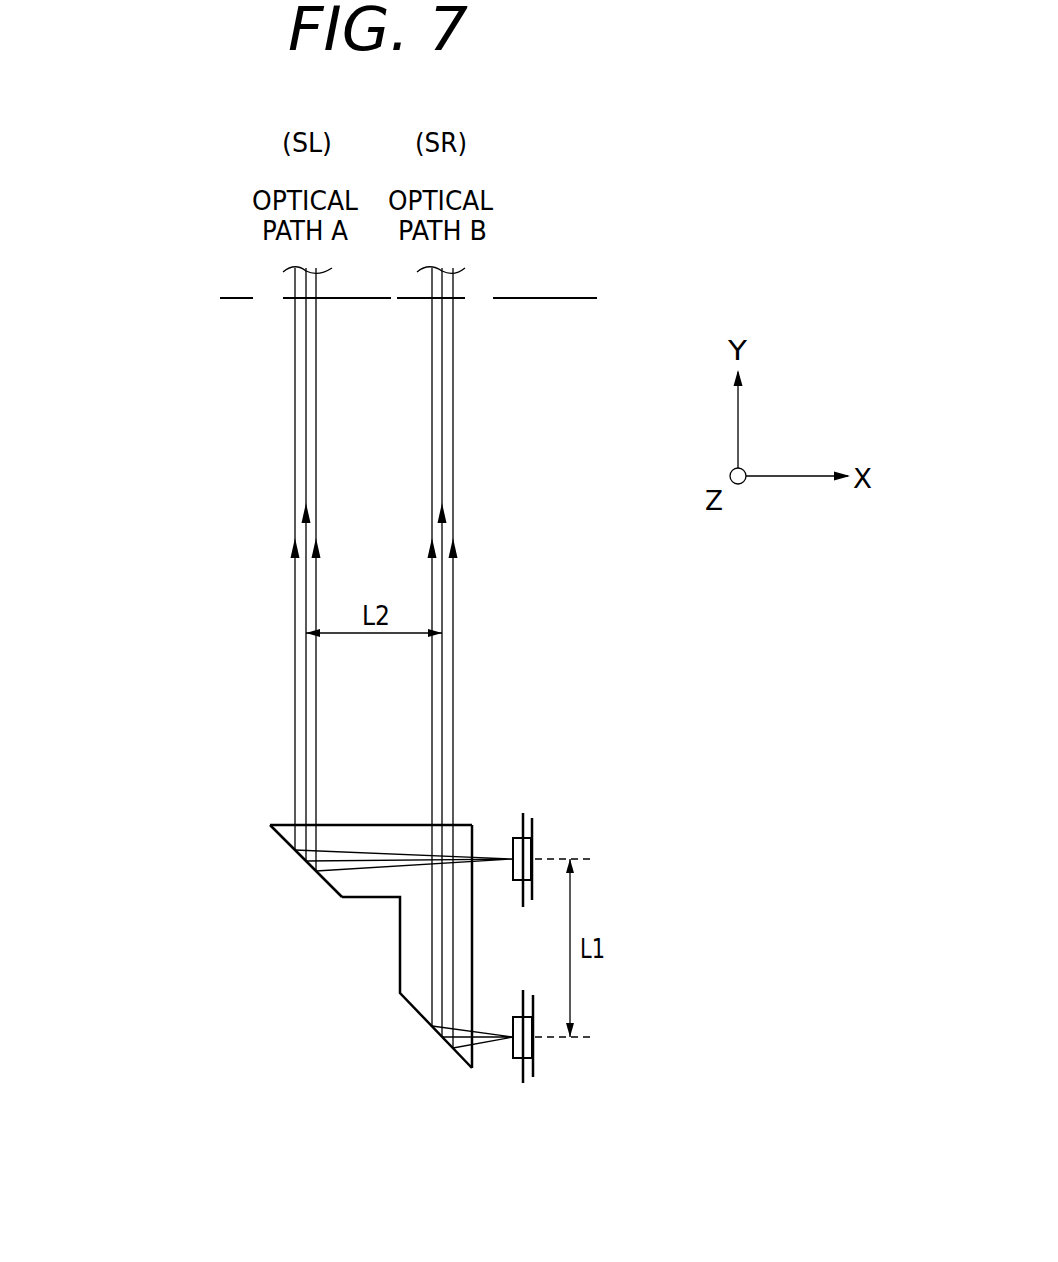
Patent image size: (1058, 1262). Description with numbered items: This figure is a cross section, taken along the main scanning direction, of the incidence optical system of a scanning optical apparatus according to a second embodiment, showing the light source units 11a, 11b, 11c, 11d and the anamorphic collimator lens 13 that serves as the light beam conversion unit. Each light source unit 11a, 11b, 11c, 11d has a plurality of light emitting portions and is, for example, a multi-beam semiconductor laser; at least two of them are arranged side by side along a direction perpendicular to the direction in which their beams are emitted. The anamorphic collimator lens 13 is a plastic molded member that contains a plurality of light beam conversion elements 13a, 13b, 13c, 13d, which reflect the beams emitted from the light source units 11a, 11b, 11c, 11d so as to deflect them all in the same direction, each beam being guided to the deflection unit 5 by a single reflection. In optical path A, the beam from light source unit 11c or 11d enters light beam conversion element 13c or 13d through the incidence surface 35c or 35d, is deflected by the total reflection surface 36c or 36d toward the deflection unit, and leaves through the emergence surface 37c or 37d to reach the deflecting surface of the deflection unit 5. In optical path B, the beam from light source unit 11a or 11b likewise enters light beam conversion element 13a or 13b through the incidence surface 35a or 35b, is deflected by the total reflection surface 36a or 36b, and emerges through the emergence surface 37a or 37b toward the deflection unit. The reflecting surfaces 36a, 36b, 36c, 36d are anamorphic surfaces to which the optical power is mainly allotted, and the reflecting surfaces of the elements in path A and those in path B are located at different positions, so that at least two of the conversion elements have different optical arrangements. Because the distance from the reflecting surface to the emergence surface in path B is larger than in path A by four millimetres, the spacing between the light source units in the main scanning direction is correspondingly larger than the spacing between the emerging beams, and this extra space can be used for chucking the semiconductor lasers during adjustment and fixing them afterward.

The deflection unit 5 is at (560, 298).
The anamorphic collimator lens 13 is at (337, 924).
The light beam conversion element 13a is at (515, 906).
The light beam conversion element 13b is at (542, 807).
The light beam conversion element 13c is at (236, 831).
The light beam conversion element 13d is at (236, 831).
The light source unit 11a is at (614, 1039).
The light source unit 11b is at (533, 1048).
The light source unit 11c is at (615, 860).
The light source unit 11d is at (535, 841).
The incidence surface 35a is at (510, 1053).
The incidence surface 35b is at (472, 1055).
The incidence surface 35c is at (537, 838).
The incidence surface 35d is at (475, 840).
The total reflection surface 36a is at (397, 1029).
The total reflection surface 36b is at (428, 1027).
The total reflection surface 36c is at (266, 883).
The total reflection surface 36d is at (300, 857).
The emergence surface 37a is at (468, 756).
The emergence surface 37b is at (463, 818).
The emergence surface 37c is at (295, 771).
The emergence surface 37d is at (280, 825).